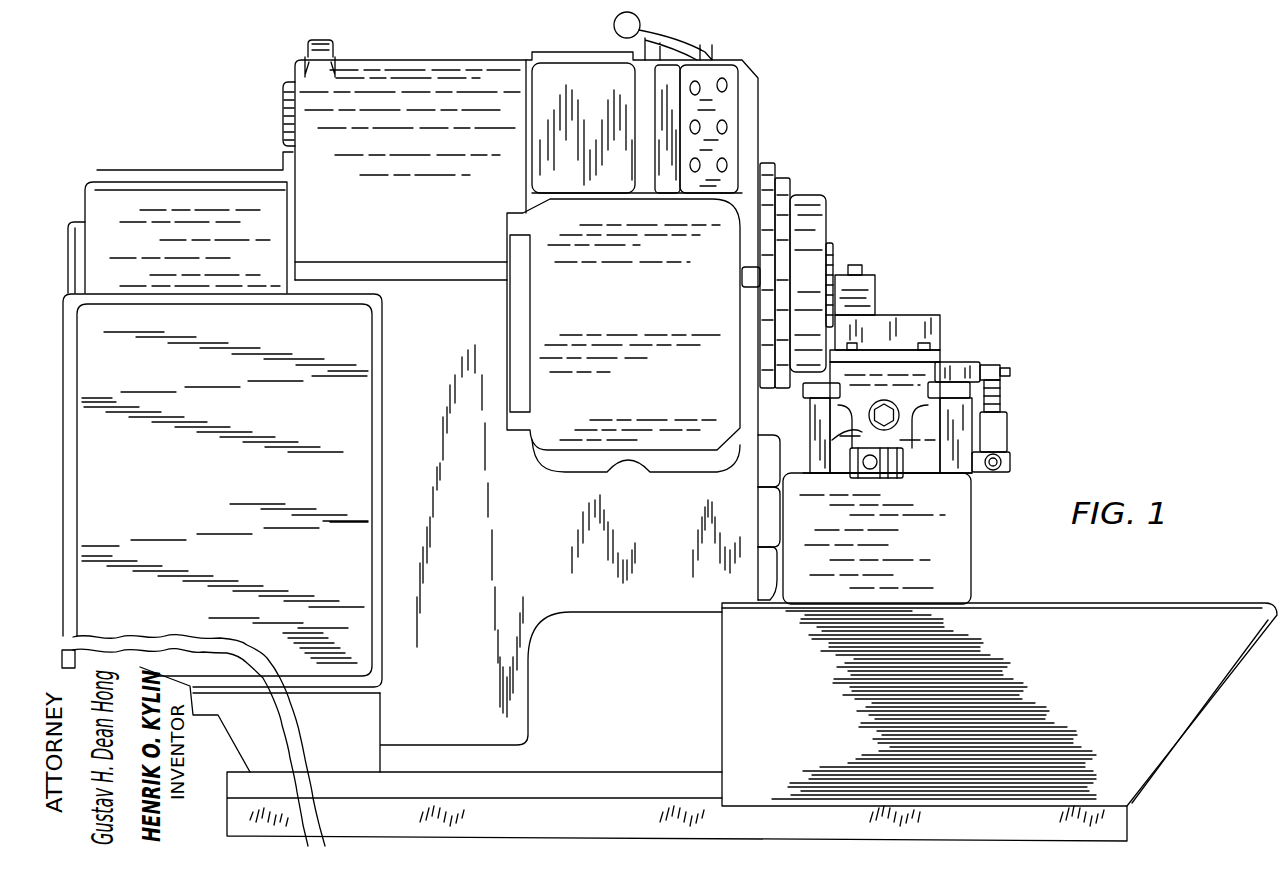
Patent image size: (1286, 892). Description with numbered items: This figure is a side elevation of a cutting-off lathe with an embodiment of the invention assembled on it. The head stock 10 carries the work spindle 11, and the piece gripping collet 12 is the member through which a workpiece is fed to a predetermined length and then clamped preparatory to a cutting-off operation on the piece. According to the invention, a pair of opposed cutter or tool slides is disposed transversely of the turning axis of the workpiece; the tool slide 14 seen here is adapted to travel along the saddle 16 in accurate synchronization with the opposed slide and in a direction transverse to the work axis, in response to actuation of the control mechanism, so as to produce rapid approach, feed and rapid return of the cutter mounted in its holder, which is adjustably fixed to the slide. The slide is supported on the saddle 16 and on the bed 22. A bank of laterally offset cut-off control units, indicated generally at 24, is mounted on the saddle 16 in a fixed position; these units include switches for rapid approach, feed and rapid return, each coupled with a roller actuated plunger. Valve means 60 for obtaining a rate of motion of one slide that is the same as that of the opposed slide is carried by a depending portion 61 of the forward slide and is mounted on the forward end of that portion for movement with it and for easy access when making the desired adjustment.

The head stock 10 is at (531, 364).
The work spindle 11 is at (818, 210).
The piece gripping collet 12 is at (832, 262).
The tool slide 14 is at (886, 369).
The saddle 16 is at (887, 437).
The bed 22 is at (958, 541).
The bank of cut-off control units 24 is at (1012, 431).
The valve means 60 is at (877, 478).
The depending portion 61 is at (862, 432).